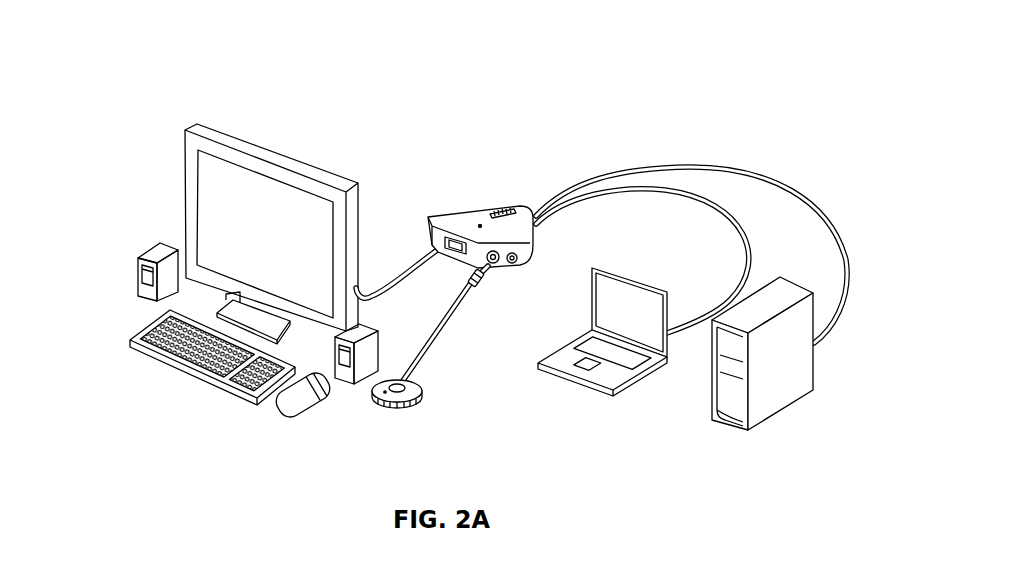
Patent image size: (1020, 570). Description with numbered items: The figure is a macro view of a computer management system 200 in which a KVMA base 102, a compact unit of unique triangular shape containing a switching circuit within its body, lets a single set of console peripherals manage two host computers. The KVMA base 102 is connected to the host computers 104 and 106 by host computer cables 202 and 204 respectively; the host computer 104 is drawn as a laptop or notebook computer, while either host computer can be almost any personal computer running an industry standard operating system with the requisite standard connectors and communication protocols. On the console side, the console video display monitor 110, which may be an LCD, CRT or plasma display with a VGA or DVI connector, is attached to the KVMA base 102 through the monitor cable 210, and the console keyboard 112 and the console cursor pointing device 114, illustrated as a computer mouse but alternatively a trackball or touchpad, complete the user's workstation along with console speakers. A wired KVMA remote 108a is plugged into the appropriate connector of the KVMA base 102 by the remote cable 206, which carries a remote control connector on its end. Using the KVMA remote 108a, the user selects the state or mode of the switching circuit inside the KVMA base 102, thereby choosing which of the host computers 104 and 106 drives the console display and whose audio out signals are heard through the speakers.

The computer management system 200 is at (156, 90).
The console video display monitor 110 is at (205, 125).
The console keyboard 112 is at (155, 358).
The console cursor pointing device 114 is at (303, 408).
The monitor cable 210 is at (413, 275).
The KVMA base 102 is at (462, 222).
The remote cable 206 is at (448, 317).
The KVMA remote 108a is at (393, 410).
The computer cable 202 is at (670, 192).
The computer cable 204 is at (742, 182).
The host computer 104 is at (608, 377).
The host computer 106 is at (788, 388).